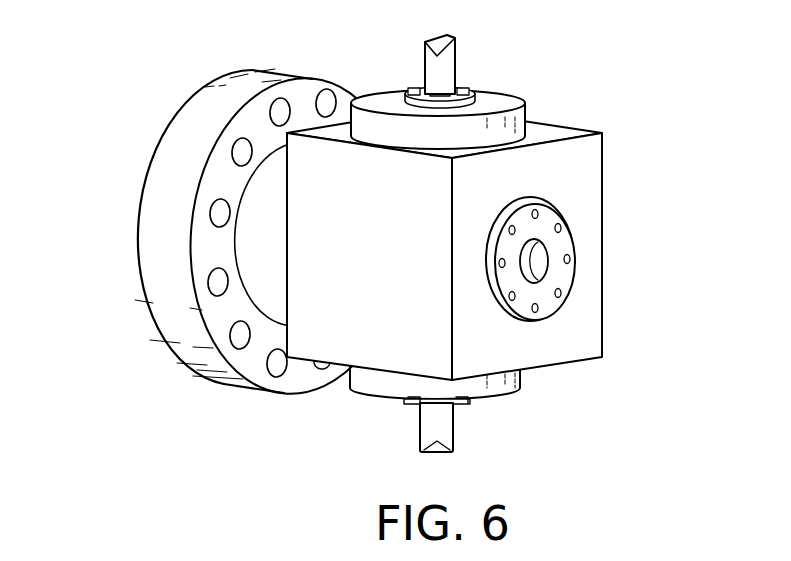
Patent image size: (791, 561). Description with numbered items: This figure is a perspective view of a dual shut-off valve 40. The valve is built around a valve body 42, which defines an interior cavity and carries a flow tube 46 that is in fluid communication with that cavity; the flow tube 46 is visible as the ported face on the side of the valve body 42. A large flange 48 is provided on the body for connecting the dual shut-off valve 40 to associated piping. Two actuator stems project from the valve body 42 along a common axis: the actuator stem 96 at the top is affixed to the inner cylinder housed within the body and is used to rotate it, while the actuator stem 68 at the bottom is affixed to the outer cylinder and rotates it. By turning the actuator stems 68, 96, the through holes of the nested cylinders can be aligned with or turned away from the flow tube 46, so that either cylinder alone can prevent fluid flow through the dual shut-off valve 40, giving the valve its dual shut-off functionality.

The dual shut-off valve 40 is at (365, 240).
The valve body 42 is at (588, 328).
The flow tube 46 is at (533, 262).
The flange 48 is at (158, 192).
The actuator stem 68 is at (455, 425).
The actuator stem 96 is at (455, 70).